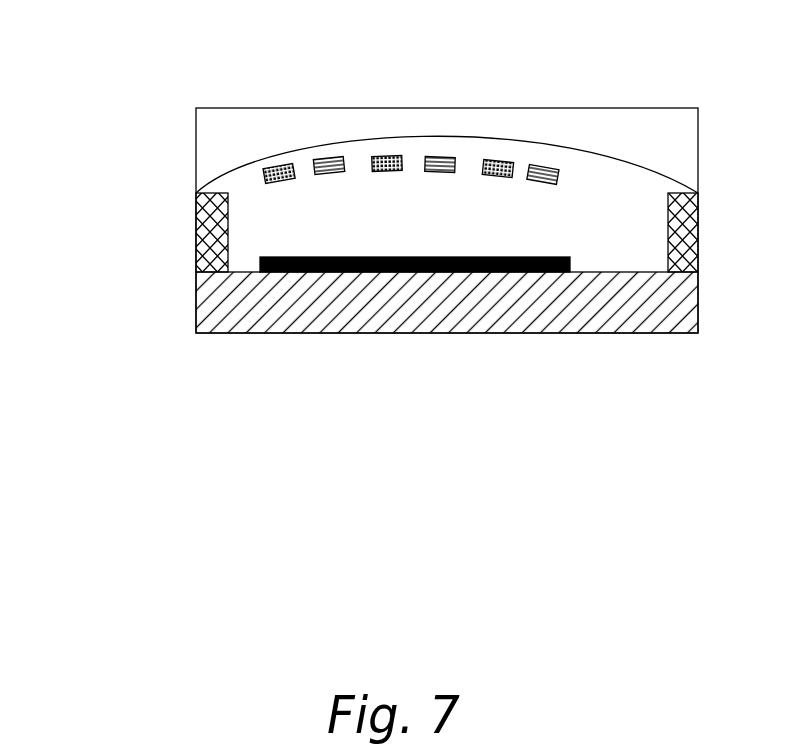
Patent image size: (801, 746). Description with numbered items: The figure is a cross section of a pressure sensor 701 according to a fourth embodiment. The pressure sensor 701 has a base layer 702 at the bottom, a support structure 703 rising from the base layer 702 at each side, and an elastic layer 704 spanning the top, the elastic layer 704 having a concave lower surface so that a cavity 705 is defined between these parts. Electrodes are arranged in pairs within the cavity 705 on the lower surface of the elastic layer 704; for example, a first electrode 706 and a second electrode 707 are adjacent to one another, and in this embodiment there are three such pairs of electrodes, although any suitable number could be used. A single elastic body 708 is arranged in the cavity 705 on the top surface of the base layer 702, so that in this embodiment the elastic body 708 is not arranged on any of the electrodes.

The pressure sensor 701 is at (146, 93).
The base layer 702 is at (480, 323).
The support structure 703 is at (690, 233).
The elastic layer 704 is at (534, 118).
The cavity 705 is at (625, 265).
The first electrode 706 is at (385, 156).
The second electrode 707 is at (437, 157).
The elastic body 708 is at (375, 272).